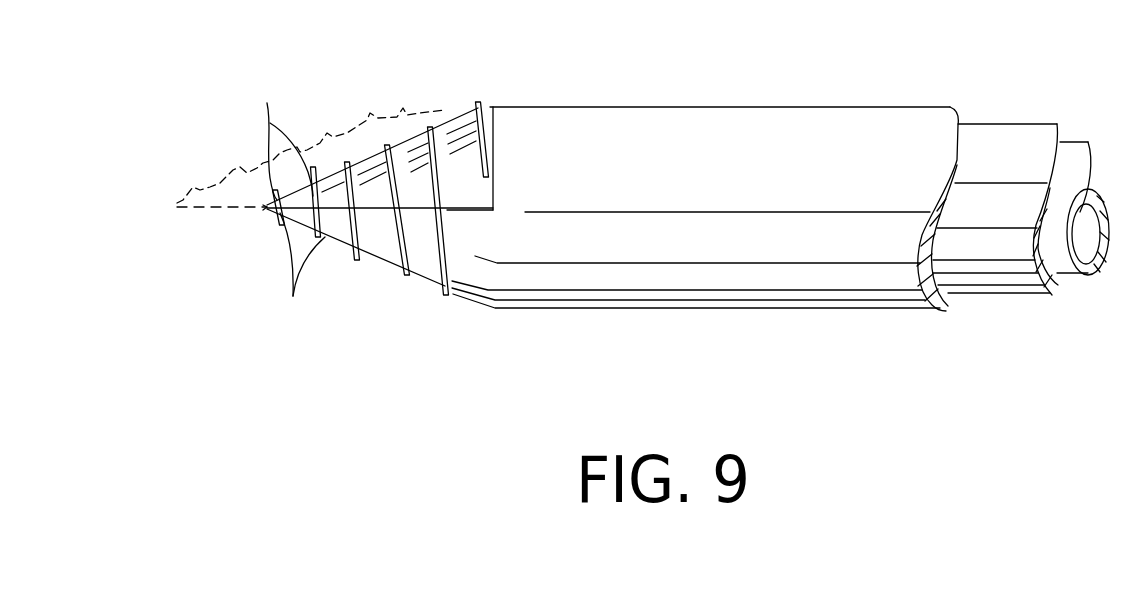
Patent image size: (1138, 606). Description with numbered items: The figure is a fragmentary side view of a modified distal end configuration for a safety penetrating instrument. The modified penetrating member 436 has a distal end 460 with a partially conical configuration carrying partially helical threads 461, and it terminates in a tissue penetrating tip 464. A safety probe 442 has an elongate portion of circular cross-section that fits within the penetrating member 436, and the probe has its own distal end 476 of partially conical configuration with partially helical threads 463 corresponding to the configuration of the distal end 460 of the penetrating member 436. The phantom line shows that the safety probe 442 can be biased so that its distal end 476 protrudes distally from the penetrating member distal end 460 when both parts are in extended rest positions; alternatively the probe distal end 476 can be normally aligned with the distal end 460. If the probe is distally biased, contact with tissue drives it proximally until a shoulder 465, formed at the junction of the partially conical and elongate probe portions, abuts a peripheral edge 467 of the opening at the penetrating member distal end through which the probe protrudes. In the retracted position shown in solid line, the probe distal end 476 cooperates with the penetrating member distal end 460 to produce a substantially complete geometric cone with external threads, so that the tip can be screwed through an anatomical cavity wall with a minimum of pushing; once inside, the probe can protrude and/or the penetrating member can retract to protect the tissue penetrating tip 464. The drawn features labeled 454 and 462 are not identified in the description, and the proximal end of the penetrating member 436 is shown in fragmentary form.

The penetrating member 436 is at (705, 311).
The safety probe 442 is at (993, 298).
The eyelet tail 454 is at (1074, 127).
The distal end 460 is at (377, 259).
The partially helical threads 461 is at (299, 275).
The lower edge of body 462 is at (493, 311).
The partially helical threads 463 is at (263, 129).
The tissue penetrating tip 464 is at (267, 207).
The shoulder 465 is at (420, 118).
The peripheral edge 467 is at (488, 186).
The distal end 476 is at (213, 183).